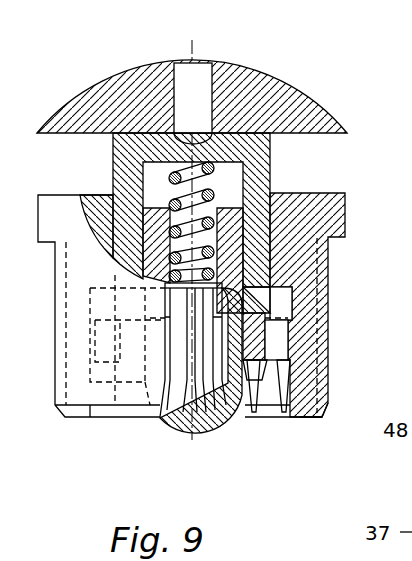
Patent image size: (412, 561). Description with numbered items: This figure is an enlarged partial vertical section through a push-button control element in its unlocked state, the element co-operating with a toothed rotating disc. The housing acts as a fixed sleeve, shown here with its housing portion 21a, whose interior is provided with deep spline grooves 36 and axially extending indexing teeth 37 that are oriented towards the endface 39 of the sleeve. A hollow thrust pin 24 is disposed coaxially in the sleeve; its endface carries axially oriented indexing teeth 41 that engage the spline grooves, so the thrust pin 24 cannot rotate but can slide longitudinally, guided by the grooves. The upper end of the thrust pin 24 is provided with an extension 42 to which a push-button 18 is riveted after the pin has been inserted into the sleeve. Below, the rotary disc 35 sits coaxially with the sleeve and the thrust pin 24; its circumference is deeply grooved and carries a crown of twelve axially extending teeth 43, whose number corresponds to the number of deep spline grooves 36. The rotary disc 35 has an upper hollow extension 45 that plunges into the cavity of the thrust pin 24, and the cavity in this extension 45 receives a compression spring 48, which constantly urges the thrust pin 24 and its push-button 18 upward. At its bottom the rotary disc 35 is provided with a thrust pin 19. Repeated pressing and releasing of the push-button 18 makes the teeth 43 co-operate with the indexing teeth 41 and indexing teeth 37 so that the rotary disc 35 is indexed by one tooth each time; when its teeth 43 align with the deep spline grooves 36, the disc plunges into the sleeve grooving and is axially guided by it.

The push-button 18 is at (295, 110).
The extension 42 is at (181, 80).
The hollow thrust pin 24 is at (258, 163).
The compression spring 48 is at (200, 177).
The upper hollow extension 45 is at (233, 230).
The housing body 21a is at (307, 258).
The deep spline grooves 36 is at (285, 295).
The indexing teeth 41 is at (275, 307).
The rotary disc 35 is at (292, 333).
The teeth 43 is at (278, 352).
The thrust pin 19 is at (236, 418).
The indexing teeth 37 is at (171, 412).
The endface 39 is at (313, 417).